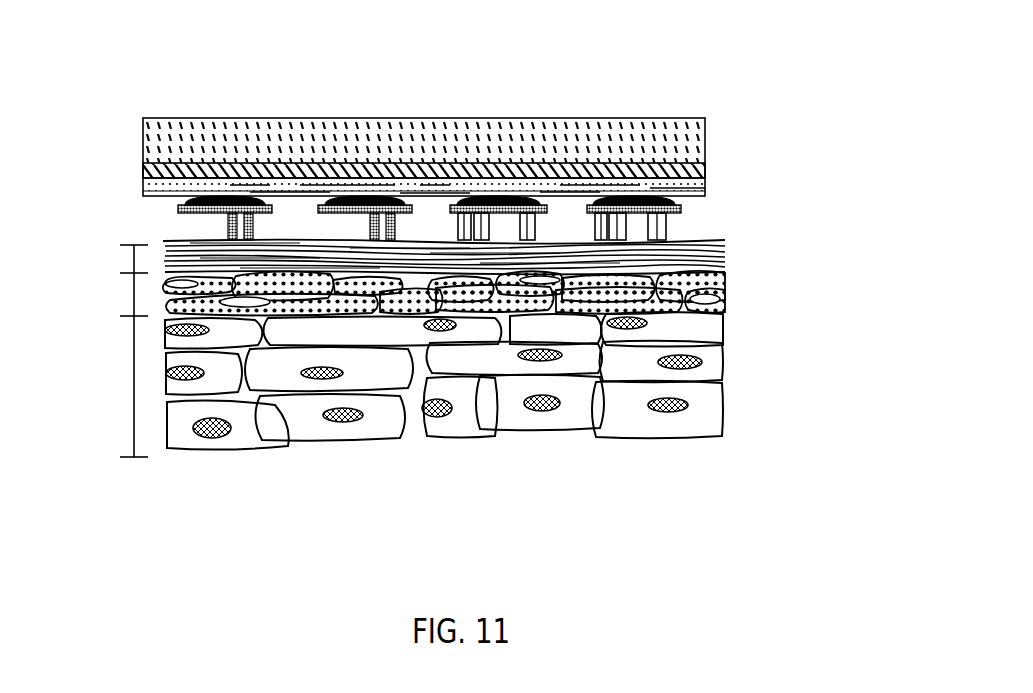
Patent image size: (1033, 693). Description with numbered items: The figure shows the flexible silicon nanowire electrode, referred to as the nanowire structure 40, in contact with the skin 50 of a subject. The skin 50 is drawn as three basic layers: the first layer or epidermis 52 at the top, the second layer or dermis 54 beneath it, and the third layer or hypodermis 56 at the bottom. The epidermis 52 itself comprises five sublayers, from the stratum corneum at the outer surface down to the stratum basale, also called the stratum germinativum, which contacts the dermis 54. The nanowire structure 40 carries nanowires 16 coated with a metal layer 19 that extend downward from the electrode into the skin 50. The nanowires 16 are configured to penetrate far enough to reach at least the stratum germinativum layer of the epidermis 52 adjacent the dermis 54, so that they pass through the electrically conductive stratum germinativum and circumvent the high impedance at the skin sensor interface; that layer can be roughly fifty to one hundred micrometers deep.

The nanowire structure 40 is at (513, 127).
The nanowires 16 is at (697, 210).
The metal layer 19 is at (477, 209).
The skin 50 is at (454, 347).
The epidermis 52 is at (130, 262).
The dermis 54 is at (130, 296).
The hypodermis 56 is at (130, 328).